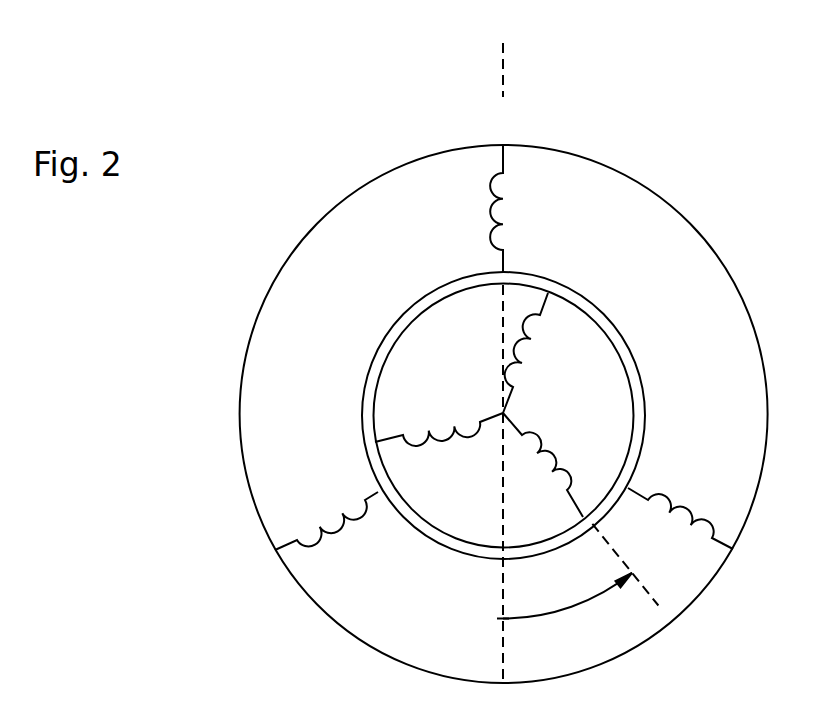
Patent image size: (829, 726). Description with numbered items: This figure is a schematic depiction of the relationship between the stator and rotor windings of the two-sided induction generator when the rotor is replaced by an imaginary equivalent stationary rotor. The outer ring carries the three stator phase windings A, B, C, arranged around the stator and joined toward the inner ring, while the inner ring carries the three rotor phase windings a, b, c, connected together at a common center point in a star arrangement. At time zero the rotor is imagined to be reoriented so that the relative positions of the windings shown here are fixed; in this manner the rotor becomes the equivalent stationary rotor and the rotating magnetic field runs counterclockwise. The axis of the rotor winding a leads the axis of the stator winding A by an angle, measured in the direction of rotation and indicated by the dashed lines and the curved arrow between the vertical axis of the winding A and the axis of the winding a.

The stator winding A is at (502, 185).
The stator winding B is at (310, 536).
The stator winding C is at (696, 534).
The rotor winding a is at (543, 471).
The rotor winding b is at (439, 421).
The rotor winding c is at (534, 352).